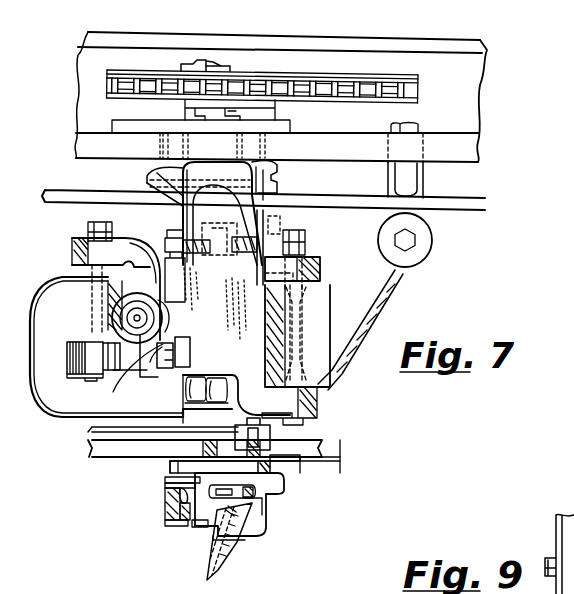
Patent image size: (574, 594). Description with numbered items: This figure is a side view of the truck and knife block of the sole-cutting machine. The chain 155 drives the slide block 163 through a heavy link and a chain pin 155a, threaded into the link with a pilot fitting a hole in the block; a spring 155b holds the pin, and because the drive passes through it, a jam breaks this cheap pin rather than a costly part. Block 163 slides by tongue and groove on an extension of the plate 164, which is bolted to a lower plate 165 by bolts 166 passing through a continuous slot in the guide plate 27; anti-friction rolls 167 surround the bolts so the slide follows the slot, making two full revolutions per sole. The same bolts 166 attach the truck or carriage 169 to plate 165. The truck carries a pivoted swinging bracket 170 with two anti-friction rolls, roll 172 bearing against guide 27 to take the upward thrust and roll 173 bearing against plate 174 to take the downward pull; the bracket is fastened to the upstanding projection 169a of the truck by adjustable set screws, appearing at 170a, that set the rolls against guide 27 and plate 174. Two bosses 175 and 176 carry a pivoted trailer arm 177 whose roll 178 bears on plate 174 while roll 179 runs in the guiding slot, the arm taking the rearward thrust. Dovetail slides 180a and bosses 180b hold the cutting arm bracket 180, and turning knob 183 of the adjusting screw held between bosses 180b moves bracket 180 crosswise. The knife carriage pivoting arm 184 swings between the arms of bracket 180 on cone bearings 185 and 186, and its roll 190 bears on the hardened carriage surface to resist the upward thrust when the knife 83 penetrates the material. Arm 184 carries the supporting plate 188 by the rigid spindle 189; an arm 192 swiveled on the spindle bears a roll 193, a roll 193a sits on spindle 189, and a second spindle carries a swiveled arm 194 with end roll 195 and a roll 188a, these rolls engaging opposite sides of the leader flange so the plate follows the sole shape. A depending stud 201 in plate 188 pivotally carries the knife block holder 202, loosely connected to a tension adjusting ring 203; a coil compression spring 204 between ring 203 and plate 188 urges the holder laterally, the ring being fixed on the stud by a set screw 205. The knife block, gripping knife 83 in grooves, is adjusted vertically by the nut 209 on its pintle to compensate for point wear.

The guide plate 27 is at (484, 152).
The knife 83 is at (218, 558).
The chain 155 is at (296, 82).
The chain pin 155a is at (226, 65).
The spring 155b is at (205, 62).
The slide block 163 is at (232, 108).
The plate 164 is at (279, 121).
The lower plate 165 is at (277, 165).
The bolts 166 is at (170, 189).
The anti-friction rolls 167 is at (165, 144).
The truck 169 is at (215, 304).
The upstanding projection 169a is at (224, 255).
The swinging bracket 170 is at (186, 205).
The arm portion 170a is at (262, 241).
The anti-friction roll 172 is at (277, 183).
The anti-friction roll 173 is at (160, 173).
The plate 174 is at (485, 200).
The boss 175 is at (308, 278).
The boss 176 is at (315, 408).
The trailer arm 177 is at (372, 308).
The roll 178 is at (423, 249).
The roll 179 is at (413, 154).
The cutting arm bracket 180 is at (135, 256).
The dovetail slides 180a is at (160, 297).
The bosses 180b is at (152, 360).
The knob 183 is at (115, 382).
The knife carriage pivoting arm 184 is at (60, 403).
The cone bearing 185 is at (72, 269).
The cone bearing 186 is at (86, 342).
The supporting plate 188 is at (283, 475).
The roll 188a is at (276, 457).
The spindle 189 is at (215, 458).
The roll 190 is at (210, 382).
The arm 192 is at (200, 436).
The roll 193 is at (210, 450).
The roll 193a is at (220, 470).
The arm 194 is at (268, 428).
The roll 195 is at (270, 445).
The depending stud 201 is at (178, 477).
The knife block holder 202 is at (166, 513).
The tension adjusting ring 203 is at (168, 498).
The coil compression spring 204 is at (172, 487).
The set screw 205 is at (188, 503).
The nut 209 is at (255, 500).